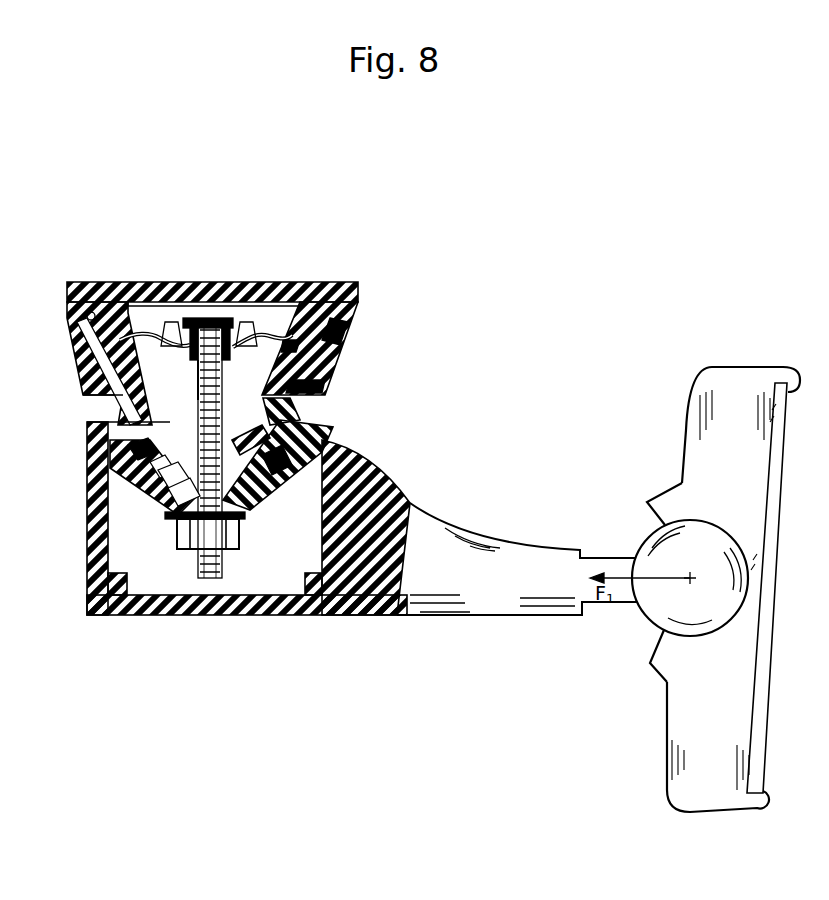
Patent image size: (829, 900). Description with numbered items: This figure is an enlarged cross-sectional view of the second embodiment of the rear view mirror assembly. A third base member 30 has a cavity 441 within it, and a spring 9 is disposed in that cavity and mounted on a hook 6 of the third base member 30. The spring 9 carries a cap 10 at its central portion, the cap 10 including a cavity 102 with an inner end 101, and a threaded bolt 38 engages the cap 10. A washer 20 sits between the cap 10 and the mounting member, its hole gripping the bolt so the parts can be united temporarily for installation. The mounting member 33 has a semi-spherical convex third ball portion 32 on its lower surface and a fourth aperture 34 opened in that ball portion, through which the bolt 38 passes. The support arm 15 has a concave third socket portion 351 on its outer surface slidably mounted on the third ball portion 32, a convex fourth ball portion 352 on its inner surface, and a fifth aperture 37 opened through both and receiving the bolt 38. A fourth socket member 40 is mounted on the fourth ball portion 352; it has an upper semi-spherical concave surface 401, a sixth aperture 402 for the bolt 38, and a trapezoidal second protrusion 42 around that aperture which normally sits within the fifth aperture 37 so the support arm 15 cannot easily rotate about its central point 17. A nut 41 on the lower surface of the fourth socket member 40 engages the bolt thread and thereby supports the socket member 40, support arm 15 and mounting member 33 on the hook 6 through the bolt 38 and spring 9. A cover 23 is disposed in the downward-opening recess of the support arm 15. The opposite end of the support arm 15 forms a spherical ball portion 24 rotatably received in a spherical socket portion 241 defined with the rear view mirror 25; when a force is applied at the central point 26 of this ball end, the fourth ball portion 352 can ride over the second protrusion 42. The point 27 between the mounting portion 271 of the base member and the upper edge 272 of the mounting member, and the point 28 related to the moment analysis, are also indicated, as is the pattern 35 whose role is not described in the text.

The spring 9 is at (172, 320).
The cap 10 is at (189, 330).
The inner end 101 is at (203, 318).
The cavity 102 is at (229, 328).
The cavity 441 is at (257, 308).
The third base member 30 is at (330, 285).
The mounting portion 271 is at (346, 326).
The hook 6 is at (283, 347).
The point 27 is at (86, 318).
The upper edge 272 is at (82, 343).
The mounting member 33 is at (312, 378).
The bolt 38 is at (197, 383).
The central point 17 is at (237, 380).
The point 28 is at (123, 397).
The third ball portion 32 is at (238, 437).
The third socket portion 351 is at (262, 433).
The cup 35 is at (333, 427).
The fourth aperture 34 is at (123, 450).
The fourth ball portion 352 is at (280, 467).
The washer 20 is at (140, 455).
The fifth aperture 37 is at (150, 468).
The upper semi-spherical concave surface 401 is at (160, 475).
The fourth socket member 40 is at (252, 500).
The second protrusion 42 is at (172, 495).
The nut 41 is at (190, 527).
The support arm 15 is at (433, 523).
The sixth aperture 402 is at (148, 572).
The cover 23 is at (197, 616).
The spherical socket portion 241 is at (678, 517).
The ball portion 24 is at (662, 610).
The central point 26 is at (703, 620).
The rear view mirror 25 is at (697, 800).